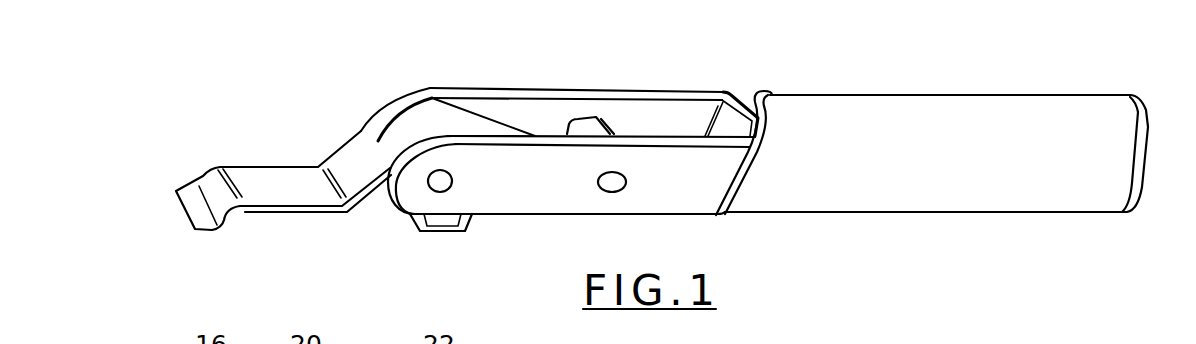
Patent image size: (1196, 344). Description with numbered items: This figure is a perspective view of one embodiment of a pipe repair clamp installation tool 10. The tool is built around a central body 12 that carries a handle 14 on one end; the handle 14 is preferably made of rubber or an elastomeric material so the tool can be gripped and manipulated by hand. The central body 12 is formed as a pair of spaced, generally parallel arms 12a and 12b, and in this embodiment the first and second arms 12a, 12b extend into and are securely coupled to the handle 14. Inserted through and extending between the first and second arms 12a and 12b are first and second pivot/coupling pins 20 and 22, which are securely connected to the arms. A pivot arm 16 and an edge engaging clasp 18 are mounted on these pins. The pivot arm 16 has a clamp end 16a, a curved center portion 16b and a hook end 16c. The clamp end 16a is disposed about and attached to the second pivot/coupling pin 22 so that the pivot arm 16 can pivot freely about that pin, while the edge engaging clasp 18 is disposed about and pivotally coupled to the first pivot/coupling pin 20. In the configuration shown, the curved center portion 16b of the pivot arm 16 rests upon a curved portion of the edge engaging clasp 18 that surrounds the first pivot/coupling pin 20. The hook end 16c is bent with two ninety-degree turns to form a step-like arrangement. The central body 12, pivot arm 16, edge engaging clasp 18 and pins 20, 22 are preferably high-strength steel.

The pipe repair clamp installation tool 10 is at (758, 81).
The central body 12 is at (556, 83).
The first arm 12a is at (493, 87).
The second arm 12b is at (518, 200).
The handle 14 is at (807, 175).
The pivot arm 16 is at (345, 149).
The clamp end 16a is at (592, 117).
The curved center portion 16b is at (432, 115).
The hook end 16c is at (193, 188).
The edge engaging clasp 18 is at (428, 228).
The first pivot/coupling pin 20 is at (430, 187).
The second pivot/coupling pin 22 is at (600, 188).